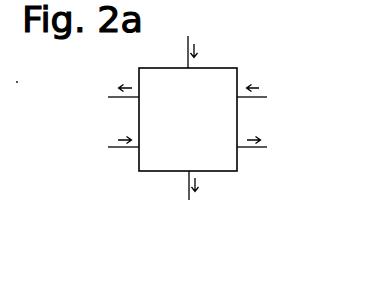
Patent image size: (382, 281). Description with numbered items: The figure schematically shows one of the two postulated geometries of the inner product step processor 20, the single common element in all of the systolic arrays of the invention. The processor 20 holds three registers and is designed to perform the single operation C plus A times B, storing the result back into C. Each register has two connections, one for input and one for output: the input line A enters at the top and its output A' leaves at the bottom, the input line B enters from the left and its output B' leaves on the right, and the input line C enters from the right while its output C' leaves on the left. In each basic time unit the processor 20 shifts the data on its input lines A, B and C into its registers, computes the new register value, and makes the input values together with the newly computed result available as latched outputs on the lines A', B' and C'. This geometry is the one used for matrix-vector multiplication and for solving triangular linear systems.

The inner product step processor 20 is at (232, 68).
The input connection of register A is at (188, 42).
The output connection of register A A' is at (190, 197).
The input connection of register B is at (116, 141).
The output connection of register B B' is at (261, 141).
The input connection of register C is at (259, 96).
The output connection of register C C' is at (115, 96).